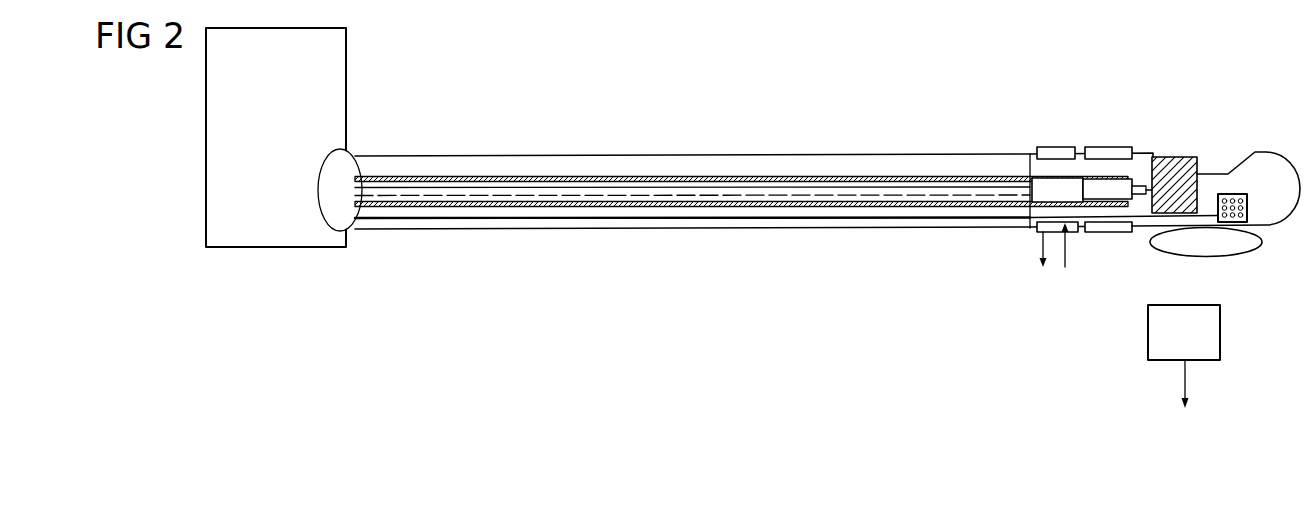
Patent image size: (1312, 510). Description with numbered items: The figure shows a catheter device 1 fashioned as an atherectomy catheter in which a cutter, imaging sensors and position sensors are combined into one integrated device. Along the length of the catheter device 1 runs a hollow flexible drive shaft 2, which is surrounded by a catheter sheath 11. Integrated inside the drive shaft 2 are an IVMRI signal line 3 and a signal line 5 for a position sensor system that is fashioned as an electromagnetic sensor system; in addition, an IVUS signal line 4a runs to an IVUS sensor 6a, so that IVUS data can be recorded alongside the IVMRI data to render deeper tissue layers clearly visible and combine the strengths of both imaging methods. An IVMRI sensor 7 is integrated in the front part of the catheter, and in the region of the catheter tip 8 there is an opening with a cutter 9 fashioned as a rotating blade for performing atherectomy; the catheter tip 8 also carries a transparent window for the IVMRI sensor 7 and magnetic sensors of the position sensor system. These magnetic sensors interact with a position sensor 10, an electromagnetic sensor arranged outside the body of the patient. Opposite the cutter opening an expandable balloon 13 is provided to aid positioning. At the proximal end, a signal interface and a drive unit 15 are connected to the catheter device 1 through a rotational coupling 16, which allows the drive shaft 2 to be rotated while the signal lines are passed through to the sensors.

The catheter device 1 is at (575, 117).
The hollow flexible drive shaft 2 is at (691, 173).
The IVMRI signal line 3 is at (666, 194).
The IVUS signal line 4a is at (775, 187).
The signal line for position sensor system 5 is at (832, 227).
The IVUS sensor 6a is at (1110, 185).
The IVMRI sensor 7 is at (1058, 185).
The catheter tip 8 is at (1220, 148).
The cutter 9 is at (1172, 165).
The position sensor 10 is at (1165, 340).
The catheter sheath 11 is at (832, 153).
The expandable balloon 13 is at (1233, 245).
The drive unit 15 is at (327, 70).
The rotational coupling 16 is at (330, 197).